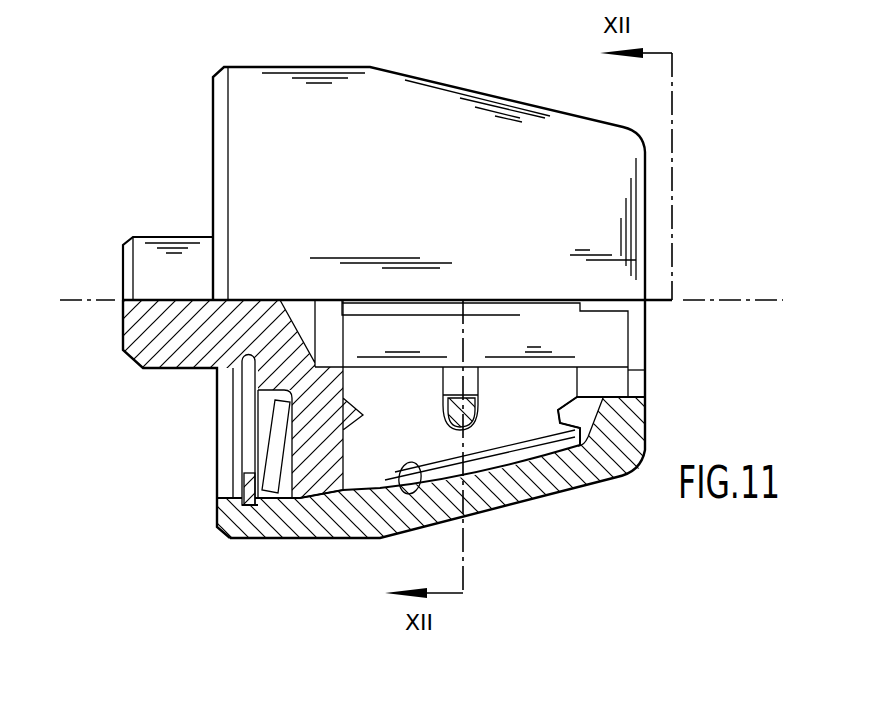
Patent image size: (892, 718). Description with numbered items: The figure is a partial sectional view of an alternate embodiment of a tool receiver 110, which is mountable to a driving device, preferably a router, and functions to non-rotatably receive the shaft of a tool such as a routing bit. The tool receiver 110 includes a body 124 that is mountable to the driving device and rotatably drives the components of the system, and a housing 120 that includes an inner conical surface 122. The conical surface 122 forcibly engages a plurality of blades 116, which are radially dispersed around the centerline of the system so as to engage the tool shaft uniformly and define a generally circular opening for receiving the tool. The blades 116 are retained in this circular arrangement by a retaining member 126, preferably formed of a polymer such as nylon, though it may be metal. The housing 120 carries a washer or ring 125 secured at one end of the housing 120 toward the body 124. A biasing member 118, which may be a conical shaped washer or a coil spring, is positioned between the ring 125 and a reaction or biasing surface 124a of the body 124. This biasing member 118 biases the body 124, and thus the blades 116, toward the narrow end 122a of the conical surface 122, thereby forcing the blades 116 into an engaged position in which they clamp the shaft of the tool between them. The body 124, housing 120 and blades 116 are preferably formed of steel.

The tool receiver 110 is at (134, 105).
The housing 120 is at (312, 100).
The body 124 is at (190, 343).
The biasing surface 124a is at (292, 472).
The ring 125 is at (245, 508).
The biasing member 118 is at (277, 438).
The inner conical surface 122 is at (408, 496).
The narrow end 122a is at (587, 445).
The retaining member 126 is at (467, 427).
The blades 116 is at (519, 432).